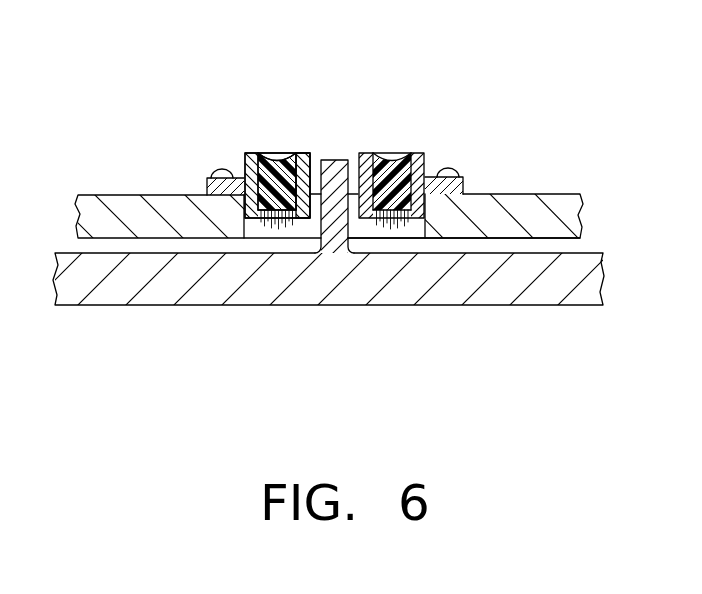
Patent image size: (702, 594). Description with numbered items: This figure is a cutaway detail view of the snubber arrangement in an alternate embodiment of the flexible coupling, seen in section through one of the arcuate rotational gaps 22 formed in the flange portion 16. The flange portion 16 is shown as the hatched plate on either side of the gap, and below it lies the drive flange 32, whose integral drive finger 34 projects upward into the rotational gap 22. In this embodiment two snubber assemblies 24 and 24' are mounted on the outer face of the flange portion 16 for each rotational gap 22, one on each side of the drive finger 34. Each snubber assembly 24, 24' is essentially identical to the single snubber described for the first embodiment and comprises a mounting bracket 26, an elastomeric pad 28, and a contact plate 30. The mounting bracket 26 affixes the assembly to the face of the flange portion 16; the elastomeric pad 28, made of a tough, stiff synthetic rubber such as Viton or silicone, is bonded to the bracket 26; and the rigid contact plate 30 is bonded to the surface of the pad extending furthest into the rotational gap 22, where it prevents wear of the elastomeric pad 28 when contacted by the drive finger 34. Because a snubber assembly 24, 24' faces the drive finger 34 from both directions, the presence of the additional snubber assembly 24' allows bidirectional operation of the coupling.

The flange portion 16 is at (125, 195).
The rotational gap 22 is at (423, 219).
The snubber assembly 24 is at (245, 110).
The snubber assembly 24' is at (394, 154).
The mounting bracket 26 is at (244, 152).
The elastomeric pad 28 is at (283, 156).
The contact plate 30 is at (303, 155).
The drive flange 32 is at (195, 306).
The drive finger 34 is at (335, 158).